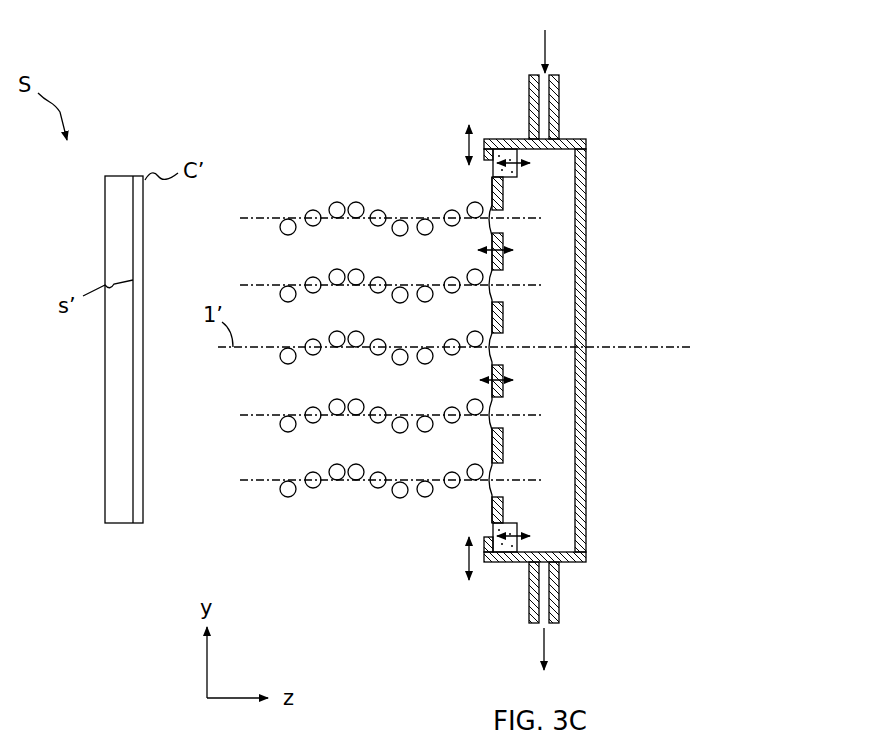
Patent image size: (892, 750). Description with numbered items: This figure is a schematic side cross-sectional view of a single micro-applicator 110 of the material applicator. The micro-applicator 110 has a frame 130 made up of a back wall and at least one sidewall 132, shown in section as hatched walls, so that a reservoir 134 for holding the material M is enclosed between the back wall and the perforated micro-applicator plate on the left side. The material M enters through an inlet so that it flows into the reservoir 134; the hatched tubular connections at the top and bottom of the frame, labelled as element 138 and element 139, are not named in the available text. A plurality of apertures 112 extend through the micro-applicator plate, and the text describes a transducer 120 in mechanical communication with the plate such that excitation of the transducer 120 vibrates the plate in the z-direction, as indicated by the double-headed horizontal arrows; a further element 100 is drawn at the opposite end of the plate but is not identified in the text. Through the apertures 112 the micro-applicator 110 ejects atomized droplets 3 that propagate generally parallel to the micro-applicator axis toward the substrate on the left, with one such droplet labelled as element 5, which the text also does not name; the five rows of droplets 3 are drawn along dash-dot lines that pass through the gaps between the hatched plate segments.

The atomized droplets 3 is at (321, 200).
The particle 5 is at (357, 203).
The upper holding element 100 is at (490, 188).
The micro-applicator 110 is at (753, 92).
The apertures 112 is at (500, 218).
The transducer 120 is at (490, 538).
The frame 130 is at (588, 175).
The sidewall 132 is at (582, 138).
The reservoir 134 is at (560, 230).
The inlet tube 138 is at (560, 93).
The outlet tube 139 is at (560, 605).